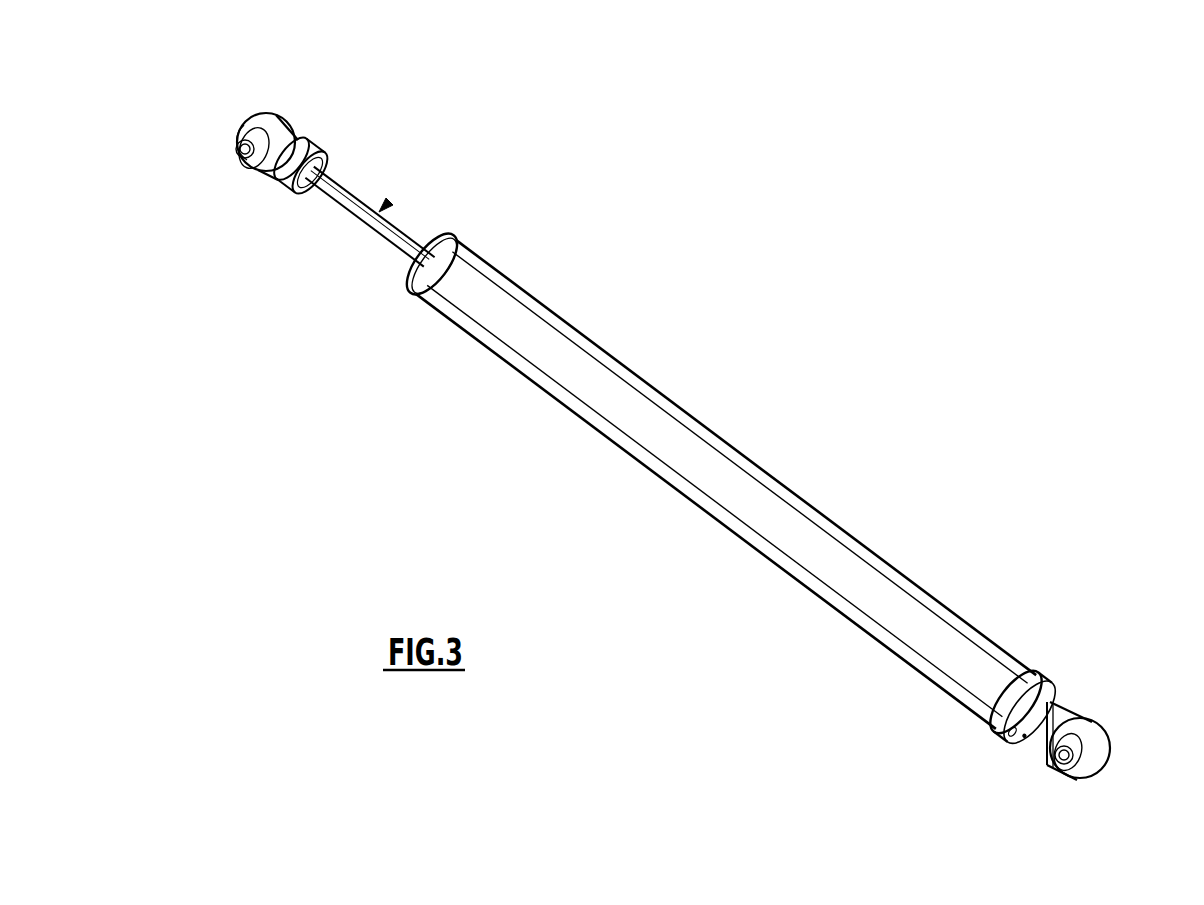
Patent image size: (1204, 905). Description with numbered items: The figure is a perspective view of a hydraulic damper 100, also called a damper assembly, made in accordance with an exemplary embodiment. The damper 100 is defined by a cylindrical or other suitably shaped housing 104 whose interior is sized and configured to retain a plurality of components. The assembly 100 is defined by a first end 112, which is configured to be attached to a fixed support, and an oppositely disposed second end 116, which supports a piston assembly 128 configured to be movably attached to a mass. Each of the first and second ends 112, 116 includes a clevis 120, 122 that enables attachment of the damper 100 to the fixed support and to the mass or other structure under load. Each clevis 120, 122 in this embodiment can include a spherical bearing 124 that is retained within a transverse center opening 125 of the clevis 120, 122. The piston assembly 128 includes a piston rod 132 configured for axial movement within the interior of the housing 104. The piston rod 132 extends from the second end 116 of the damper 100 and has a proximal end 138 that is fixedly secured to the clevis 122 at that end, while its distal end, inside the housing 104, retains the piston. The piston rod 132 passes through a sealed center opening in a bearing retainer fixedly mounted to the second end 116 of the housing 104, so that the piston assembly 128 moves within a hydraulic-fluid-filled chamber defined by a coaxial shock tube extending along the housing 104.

The damper 100 is at (685, 154).
The housing 104 is at (682, 480).
The first end 112 is at (1031, 760).
The second end 116 is at (411, 292).
The clevis 120 is at (1095, 738).
The clevis 122 is at (263, 112).
The spherical bearing 124 is at (239, 151).
The transverse center opening 125 is at (243, 137).
The piston assembly 128 is at (386, 206).
The piston rod 132 is at (368, 236).
The proximal end 138 is at (303, 196).